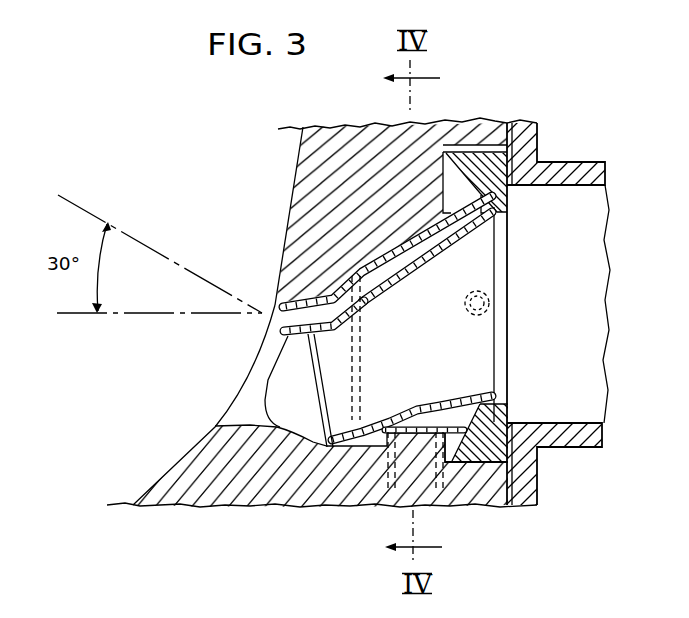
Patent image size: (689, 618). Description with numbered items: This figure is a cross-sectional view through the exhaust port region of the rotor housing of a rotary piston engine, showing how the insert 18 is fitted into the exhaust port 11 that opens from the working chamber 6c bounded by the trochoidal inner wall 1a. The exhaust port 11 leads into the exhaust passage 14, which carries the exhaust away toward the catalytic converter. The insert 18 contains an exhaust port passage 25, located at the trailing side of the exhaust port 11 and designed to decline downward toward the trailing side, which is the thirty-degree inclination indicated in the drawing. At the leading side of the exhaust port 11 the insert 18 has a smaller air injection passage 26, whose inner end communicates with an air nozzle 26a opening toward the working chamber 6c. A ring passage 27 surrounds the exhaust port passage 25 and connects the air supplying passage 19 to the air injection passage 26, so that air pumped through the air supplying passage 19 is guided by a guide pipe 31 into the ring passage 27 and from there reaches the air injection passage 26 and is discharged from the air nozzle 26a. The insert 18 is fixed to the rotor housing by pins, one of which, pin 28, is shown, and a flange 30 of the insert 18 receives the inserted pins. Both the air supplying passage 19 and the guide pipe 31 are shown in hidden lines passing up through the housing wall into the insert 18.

The inner wall 1a is at (170, 477).
The exhaust port 11 is at (252, 391).
The exhaust passage 14 is at (565, 188).
The insert 18 is at (514, 278).
The air supplying passage 19 is at (445, 510).
The exhaust port passage 25 is at (477, 349).
The air injection passage 26 is at (307, 327).
The air nozzle 26a is at (277, 302).
The ring passage 27 is at (472, 413).
The pin 28 is at (463, 312).
The flange 30 is at (503, 448).
The guide pipe 31 is at (378, 510).
The working chamber 6c is at (213, 206).